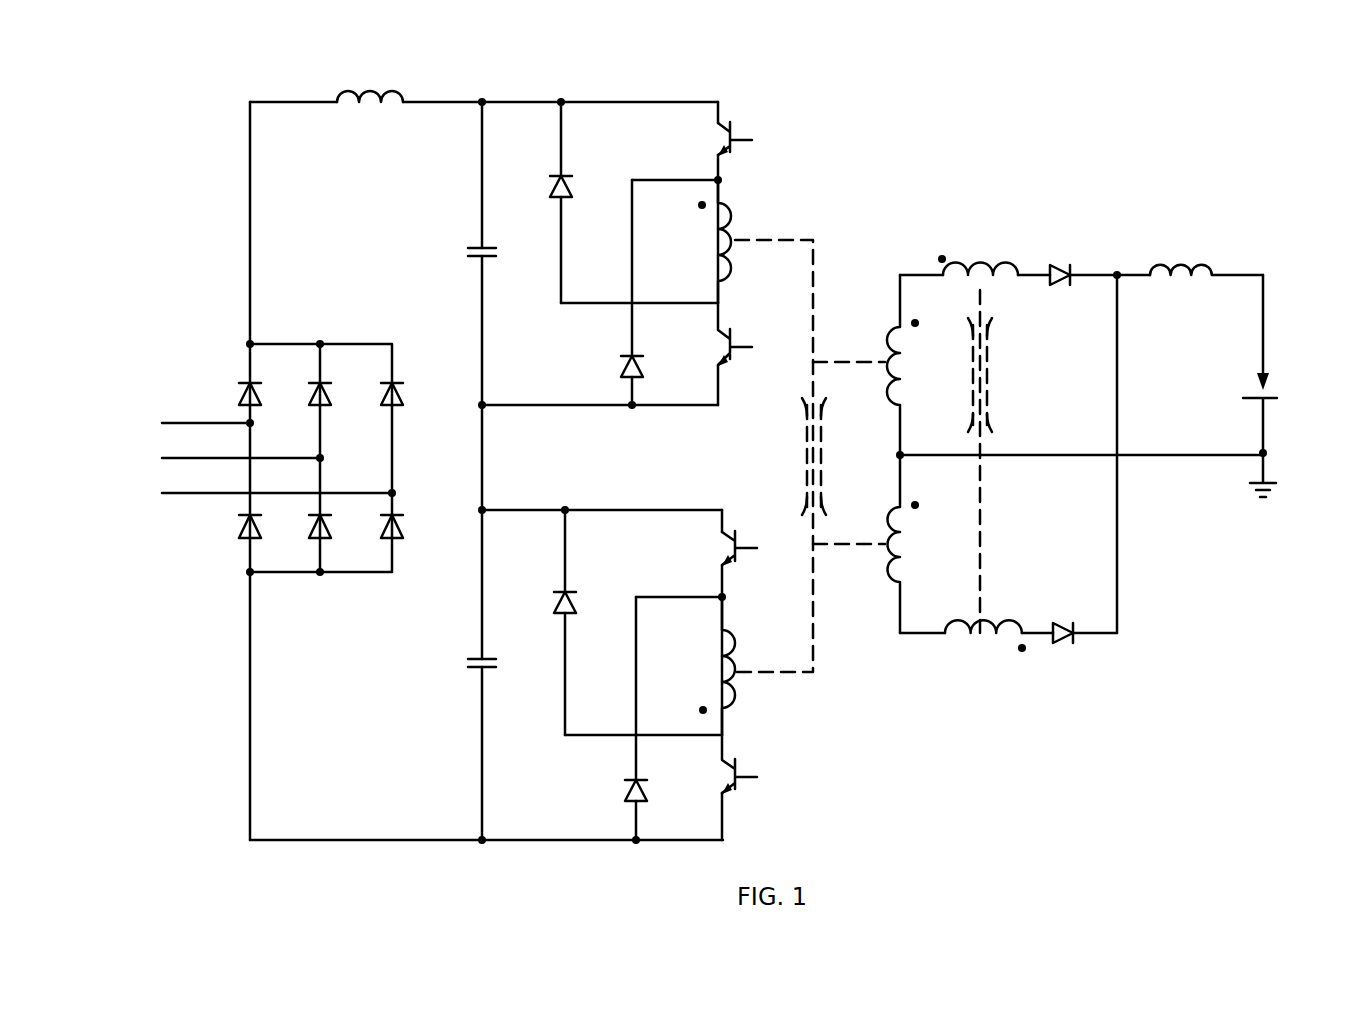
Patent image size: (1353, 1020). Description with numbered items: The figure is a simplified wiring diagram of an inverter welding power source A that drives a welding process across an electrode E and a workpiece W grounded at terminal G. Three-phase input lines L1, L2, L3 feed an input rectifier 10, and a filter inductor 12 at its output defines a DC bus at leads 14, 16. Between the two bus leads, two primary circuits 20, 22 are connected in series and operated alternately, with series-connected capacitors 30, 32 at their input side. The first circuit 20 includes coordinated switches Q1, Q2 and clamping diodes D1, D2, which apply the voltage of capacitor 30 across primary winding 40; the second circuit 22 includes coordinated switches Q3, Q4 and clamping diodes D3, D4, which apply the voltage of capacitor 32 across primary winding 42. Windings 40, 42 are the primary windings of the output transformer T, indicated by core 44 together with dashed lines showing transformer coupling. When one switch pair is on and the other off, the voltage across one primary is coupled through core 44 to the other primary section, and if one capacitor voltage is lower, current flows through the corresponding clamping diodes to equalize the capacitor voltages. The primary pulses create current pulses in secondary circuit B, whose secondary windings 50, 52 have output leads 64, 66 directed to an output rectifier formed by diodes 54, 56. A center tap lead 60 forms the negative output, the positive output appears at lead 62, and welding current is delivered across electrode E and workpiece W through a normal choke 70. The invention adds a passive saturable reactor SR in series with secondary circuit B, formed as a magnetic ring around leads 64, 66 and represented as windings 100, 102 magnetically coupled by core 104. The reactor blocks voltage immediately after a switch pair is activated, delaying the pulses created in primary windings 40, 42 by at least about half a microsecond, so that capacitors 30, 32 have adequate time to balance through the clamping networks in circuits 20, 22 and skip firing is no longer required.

The input rectifier 10 is at (320, 338).
The filter inductor 12 is at (378, 91).
The DC bus lead 14 is at (463, 105).
The DC bus lead 16 is at (462, 836).
The first primary circuit 20 is at (646, 227).
The second primary circuit 22 is at (635, 637).
The capacitor 30 is at (463, 253).
The capacitor 32 is at (465, 665).
The primary winding 40 is at (733, 220).
The primary winding 42 is at (735, 647).
The transformer core 44 is at (804, 470).
The secondary winding 50 is at (907, 366).
The secondary winding 52 is at (906, 547).
The rectifier diode 54 is at (1063, 262).
The rectifier diode 56 is at (1063, 640).
The center tap lead 60 is at (1080, 458).
The output lead 62 is at (1099, 282).
The output lead 64 is at (1038, 275).
The output lead 66 is at (1043, 636).
The choke 70 is at (1187, 262).
The saturable reactor winding 100 is at (978, 268).
The saturable reactor winding 102 is at (978, 640).
The saturable reactor core 104 is at (990, 396).
The power source A is at (148, 690).
The secondary circuit B is at (1081, 456).
The transformer T is at (845, 426).
The saturable reactor SR is at (997, 358).
The electrode E is at (1268, 384).
The workpiece W is at (1276, 401).
The ground terminal G is at (1278, 490).
The input line 1 L1 is at (186, 424).
The input line 2 L2 is at (221, 459).
The input line 3 L3 is at (257, 494).
The clamping diode D1 is at (552, 183).
The clamping diode D2 is at (622, 366).
The clamping diode D3 is at (555, 602).
The clamping diode D4 is at (627, 790).
The switch Q1 is at (716, 142).
The switch Q2 is at (728, 349).
The switch Q3 is at (728, 550).
The switch Q4 is at (730, 778).